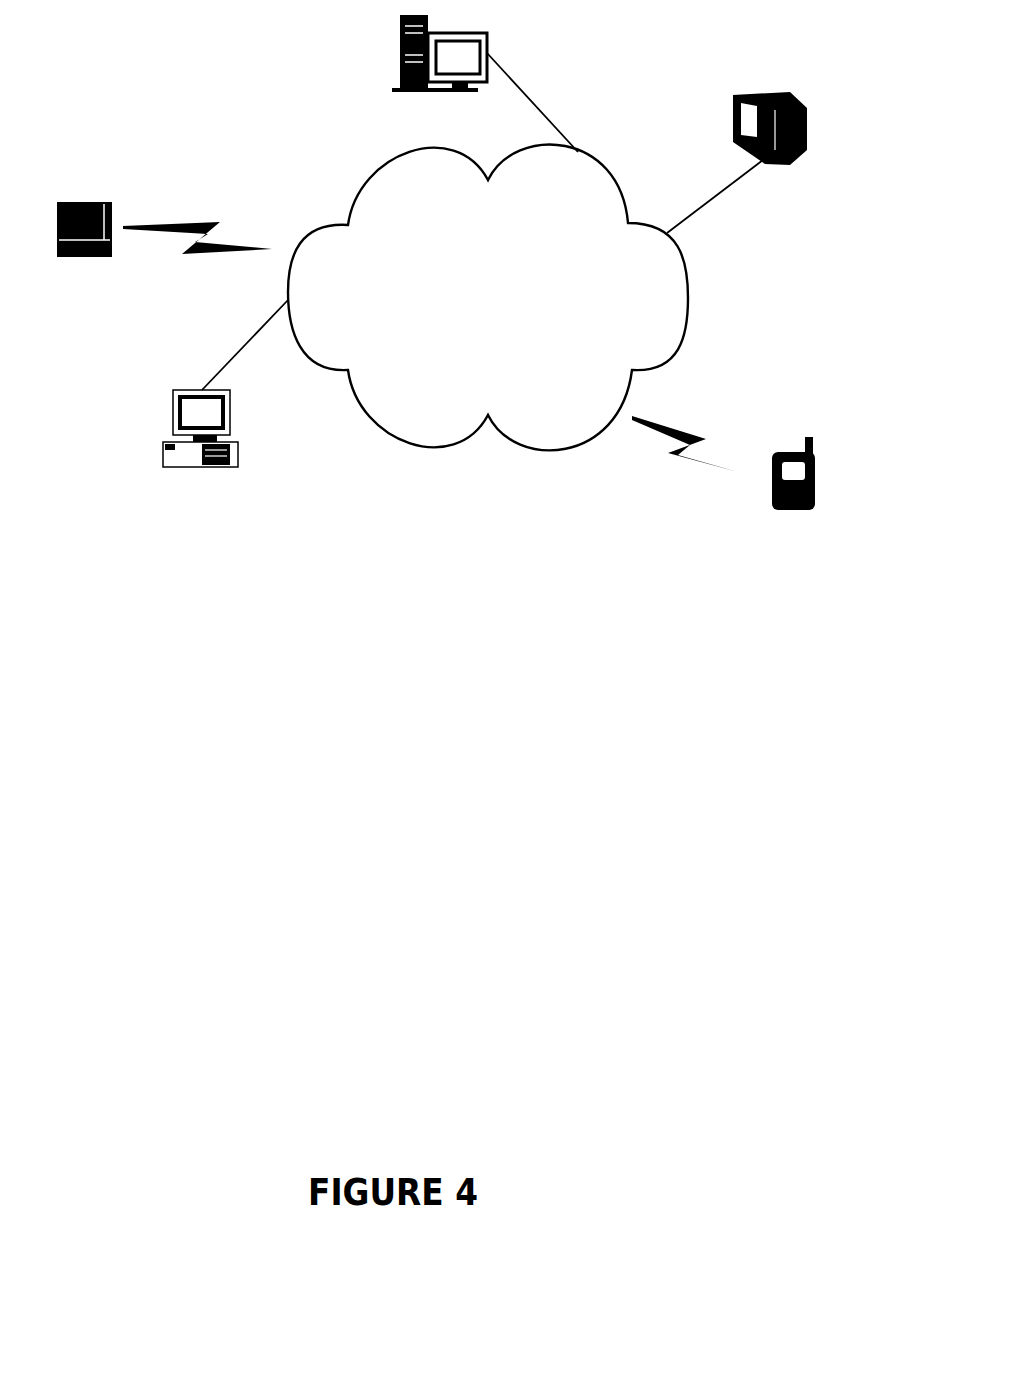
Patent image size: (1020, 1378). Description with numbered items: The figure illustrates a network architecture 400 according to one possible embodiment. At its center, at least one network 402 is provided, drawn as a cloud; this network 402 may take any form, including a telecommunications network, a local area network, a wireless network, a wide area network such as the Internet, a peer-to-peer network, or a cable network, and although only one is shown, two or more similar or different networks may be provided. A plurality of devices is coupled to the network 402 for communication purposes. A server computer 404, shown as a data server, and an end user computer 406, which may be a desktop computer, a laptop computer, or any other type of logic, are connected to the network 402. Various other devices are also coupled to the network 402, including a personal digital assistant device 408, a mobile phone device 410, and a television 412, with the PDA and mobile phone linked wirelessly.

The network architecture 400 is at (394, 751).
The network 402 is at (547, 448).
The server computer 404 is at (400, 53).
The end user computer 406 is at (162, 447).
The personal digital assistant (PDA) device 408 is at (83, 202).
The mobile phone device 410 is at (772, 452).
The television 412 is at (748, 89).